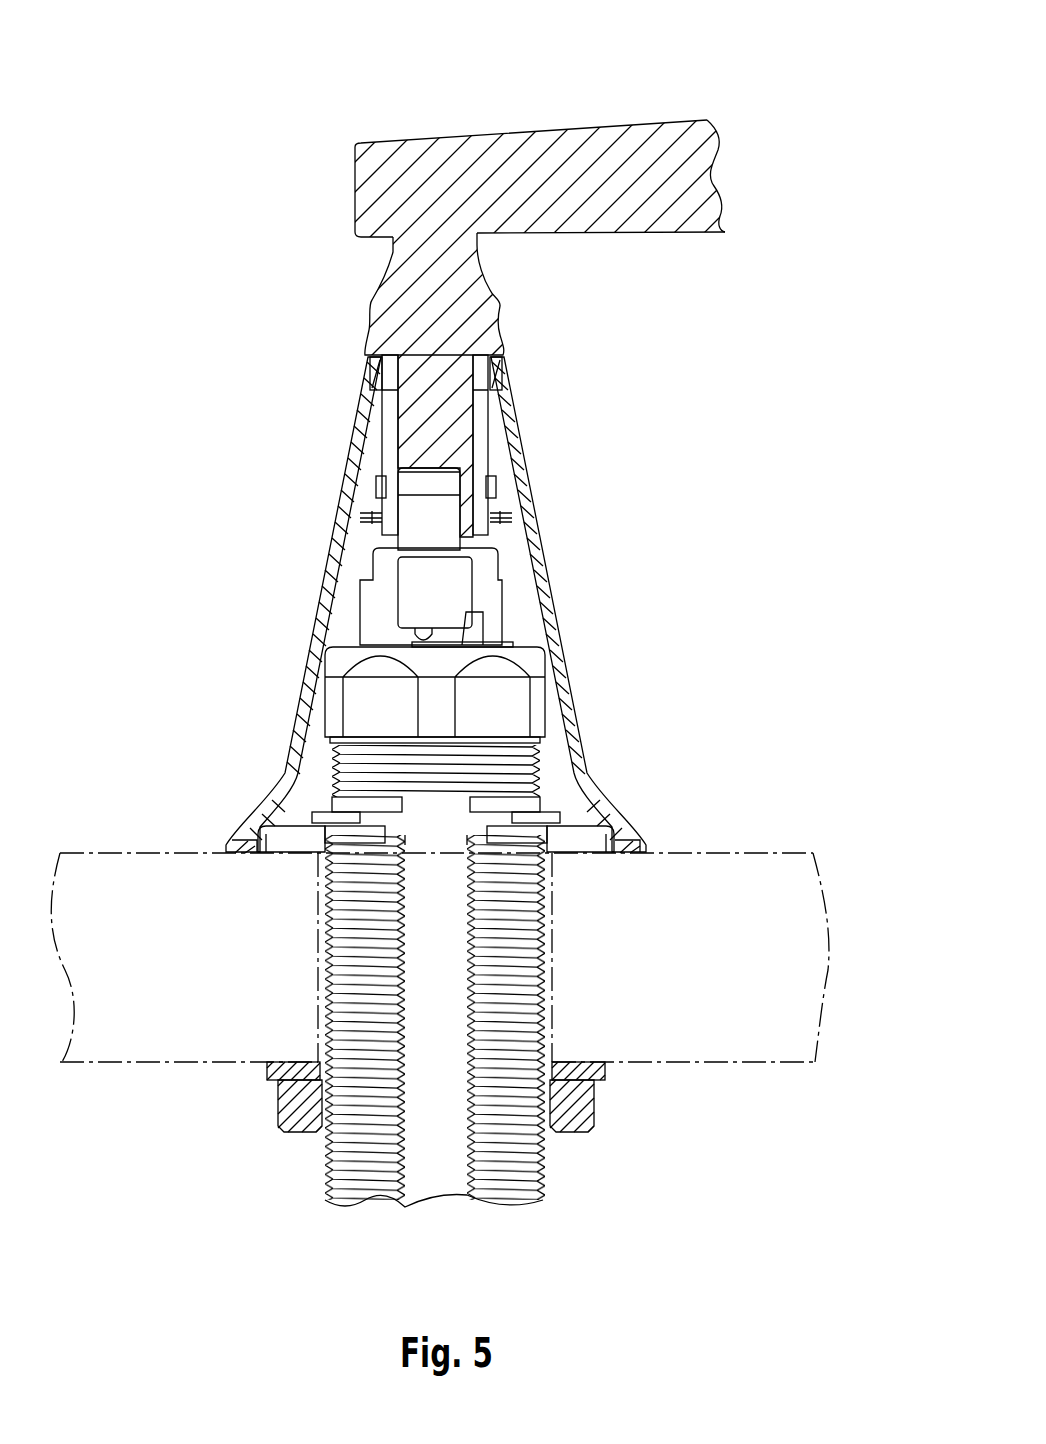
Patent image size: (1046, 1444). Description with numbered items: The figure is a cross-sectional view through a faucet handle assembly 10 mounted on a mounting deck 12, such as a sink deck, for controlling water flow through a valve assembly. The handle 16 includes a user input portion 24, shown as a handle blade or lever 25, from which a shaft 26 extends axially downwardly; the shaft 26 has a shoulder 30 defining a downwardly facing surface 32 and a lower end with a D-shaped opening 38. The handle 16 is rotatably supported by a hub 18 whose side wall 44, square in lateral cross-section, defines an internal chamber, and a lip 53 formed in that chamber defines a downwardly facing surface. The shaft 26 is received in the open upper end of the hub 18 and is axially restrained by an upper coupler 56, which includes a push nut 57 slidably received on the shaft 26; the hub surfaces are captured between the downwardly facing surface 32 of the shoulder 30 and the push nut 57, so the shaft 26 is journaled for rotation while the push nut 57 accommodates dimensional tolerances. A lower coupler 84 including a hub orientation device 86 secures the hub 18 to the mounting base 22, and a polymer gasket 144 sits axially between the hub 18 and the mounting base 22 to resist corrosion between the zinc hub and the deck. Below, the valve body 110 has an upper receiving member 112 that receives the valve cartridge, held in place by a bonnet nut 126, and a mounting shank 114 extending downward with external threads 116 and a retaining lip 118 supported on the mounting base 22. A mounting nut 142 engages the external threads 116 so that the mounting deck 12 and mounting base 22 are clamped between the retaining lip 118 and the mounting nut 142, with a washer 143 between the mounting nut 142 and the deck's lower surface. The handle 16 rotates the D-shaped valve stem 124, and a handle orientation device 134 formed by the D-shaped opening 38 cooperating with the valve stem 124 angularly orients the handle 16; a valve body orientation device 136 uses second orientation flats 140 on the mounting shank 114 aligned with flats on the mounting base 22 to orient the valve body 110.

The faucet handle assembly 10 is at (800, 104).
The mounting deck 12 is at (112, 852).
The handle 16 is at (553, 128).
The hub 18 is at (575, 671).
The mounting base 22 is at (258, 812).
The user input portion 24 is at (675, 120).
The handle blade or lever 25 is at (708, 188).
The shaft 26 is at (380, 418).
The shoulder 30 is at (363, 333).
The downwardly facing surface 32 is at (490, 370).
The opening 38 is at (453, 478).
The side wall 44 is at (543, 593).
The lip 53 is at (493, 513).
The upper coupler 56 is at (370, 525).
The push nut 57 is at (497, 530).
The lower coupler 84 is at (278, 858).
The hub orientation device 86 is at (616, 825).
The valve body 110 is at (540, 967).
The upper receiving member 112 is at (330, 768).
The mounting shank 114 is at (323, 1160).
The external threads 116 is at (543, 1157).
The retaining lip 118 is at (558, 818).
The valve stem 124 is at (385, 545).
The bonnet nut 126 is at (355, 700).
The handle orientation device 134 is at (362, 498).
The valve body orientation device 136 is at (550, 794).
The second orientation flats 140 is at (440, 1183).
The mounting nut 142 is at (593, 1100).
The washer 143 is at (265, 1068).
The gasket 144 is at (643, 848).